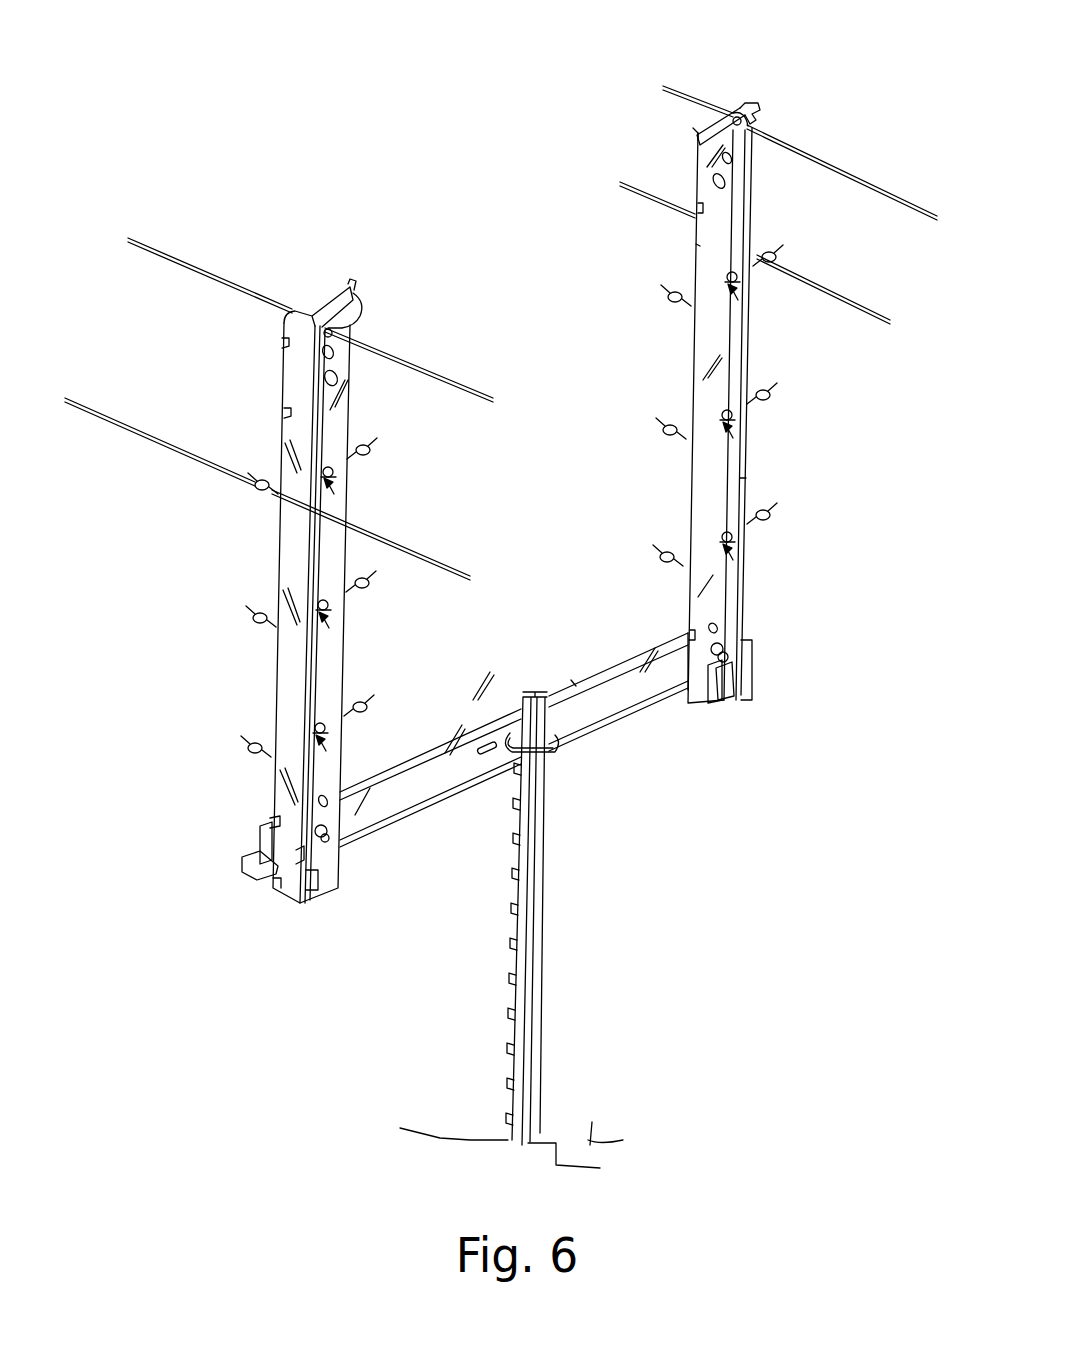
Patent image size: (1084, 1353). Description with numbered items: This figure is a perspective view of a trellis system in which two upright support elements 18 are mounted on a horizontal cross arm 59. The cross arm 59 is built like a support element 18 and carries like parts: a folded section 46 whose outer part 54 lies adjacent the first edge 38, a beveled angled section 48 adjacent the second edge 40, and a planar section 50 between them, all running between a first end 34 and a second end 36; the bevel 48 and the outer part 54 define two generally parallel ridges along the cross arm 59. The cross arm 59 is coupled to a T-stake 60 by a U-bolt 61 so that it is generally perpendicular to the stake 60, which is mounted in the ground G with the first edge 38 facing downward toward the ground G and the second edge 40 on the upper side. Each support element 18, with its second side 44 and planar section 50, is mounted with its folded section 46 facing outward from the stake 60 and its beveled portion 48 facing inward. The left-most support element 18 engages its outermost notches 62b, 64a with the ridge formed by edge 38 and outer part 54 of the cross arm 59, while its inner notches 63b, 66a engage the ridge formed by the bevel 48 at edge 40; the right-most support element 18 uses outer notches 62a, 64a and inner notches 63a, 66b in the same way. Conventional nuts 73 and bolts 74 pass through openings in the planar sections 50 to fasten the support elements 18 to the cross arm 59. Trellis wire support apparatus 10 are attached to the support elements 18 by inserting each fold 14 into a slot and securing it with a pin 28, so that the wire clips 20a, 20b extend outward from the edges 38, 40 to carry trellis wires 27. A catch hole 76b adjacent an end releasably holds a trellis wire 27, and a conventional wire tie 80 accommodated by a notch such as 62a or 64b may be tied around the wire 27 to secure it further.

The trellis wire support apparatus 10 is at (385, 449).
The fold 14 is at (334, 486).
The support element 18 is at (333, 667).
The wire clip 20a is at (260, 470).
The wire clip 20b is at (772, 252).
The trellis wire 27 is at (183, 262).
The pin 28 is at (340, 470).
The first end 34 is at (327, 290).
The second end 36 is at (708, 127).
The first edge 38 is at (281, 545).
The second edge 40 is at (432, 752).
The second side 44 is at (438, 805).
The folded section 46 is at (245, 861).
The angled section 48 is at (352, 278).
The planar section 50 is at (455, 783).
The outer part of folded section 54 is at (282, 702).
The cross arm 59 is at (593, 708).
The T-stake 60 is at (548, 913).
The U-bolt 61 is at (560, 762).
The notch 62a is at (282, 343).
The notch 62b is at (272, 884).
The notch 63a is at (285, 414).
The notch 63b is at (272, 822).
The notch 64a is at (690, 699).
The notch 64b is at (693, 137).
The notch 66a is at (688, 635).
The notch 66b is at (695, 203).
The nut 73 is at (300, 853).
The bolt 74 is at (333, 857).
The catch hole 76b is at (738, 116).
The wire tie 80 is at (360, 312).
The ground G is at (592, 1135).